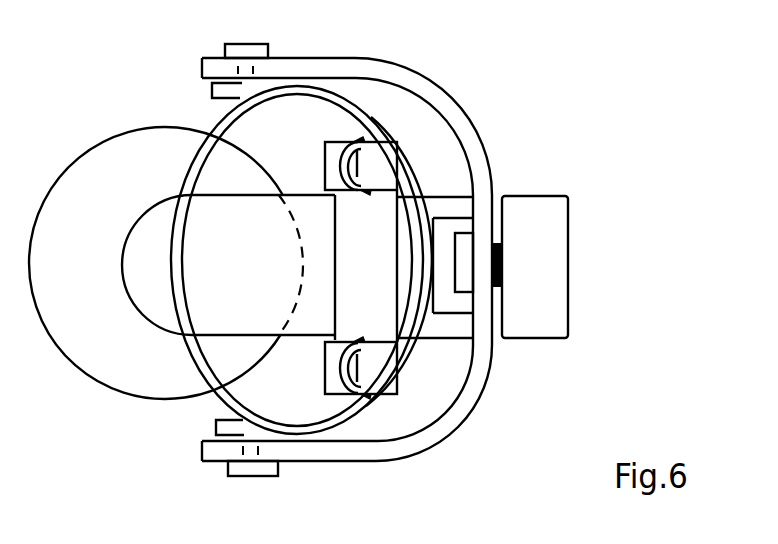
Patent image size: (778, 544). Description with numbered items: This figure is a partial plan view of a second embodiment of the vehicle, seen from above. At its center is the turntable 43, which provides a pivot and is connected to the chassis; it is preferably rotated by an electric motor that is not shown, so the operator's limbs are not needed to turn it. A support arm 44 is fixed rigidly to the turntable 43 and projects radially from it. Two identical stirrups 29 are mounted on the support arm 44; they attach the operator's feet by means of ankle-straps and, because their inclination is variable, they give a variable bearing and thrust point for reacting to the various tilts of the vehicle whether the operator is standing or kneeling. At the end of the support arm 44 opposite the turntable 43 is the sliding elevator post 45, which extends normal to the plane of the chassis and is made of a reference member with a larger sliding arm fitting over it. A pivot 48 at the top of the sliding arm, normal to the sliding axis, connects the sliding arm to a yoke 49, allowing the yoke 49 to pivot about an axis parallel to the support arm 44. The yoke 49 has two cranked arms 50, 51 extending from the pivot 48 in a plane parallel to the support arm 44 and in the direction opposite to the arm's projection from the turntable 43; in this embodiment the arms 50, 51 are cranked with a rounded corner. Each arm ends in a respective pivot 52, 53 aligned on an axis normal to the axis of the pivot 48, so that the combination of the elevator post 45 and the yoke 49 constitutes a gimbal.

The stirrup 29 is at (333, 165).
The turntable 43 is at (97, 272).
The support arm 44 is at (254, 272).
The sliding elevator post 45 is at (548, 300).
The pivot 48 is at (502, 262).
The yoke 49 is at (473, 145).
The cranked arm 50 is at (312, 454).
The cranked arm 51 is at (374, 75).
The pivot 52 is at (240, 467).
The pivot 53 is at (246, 53).